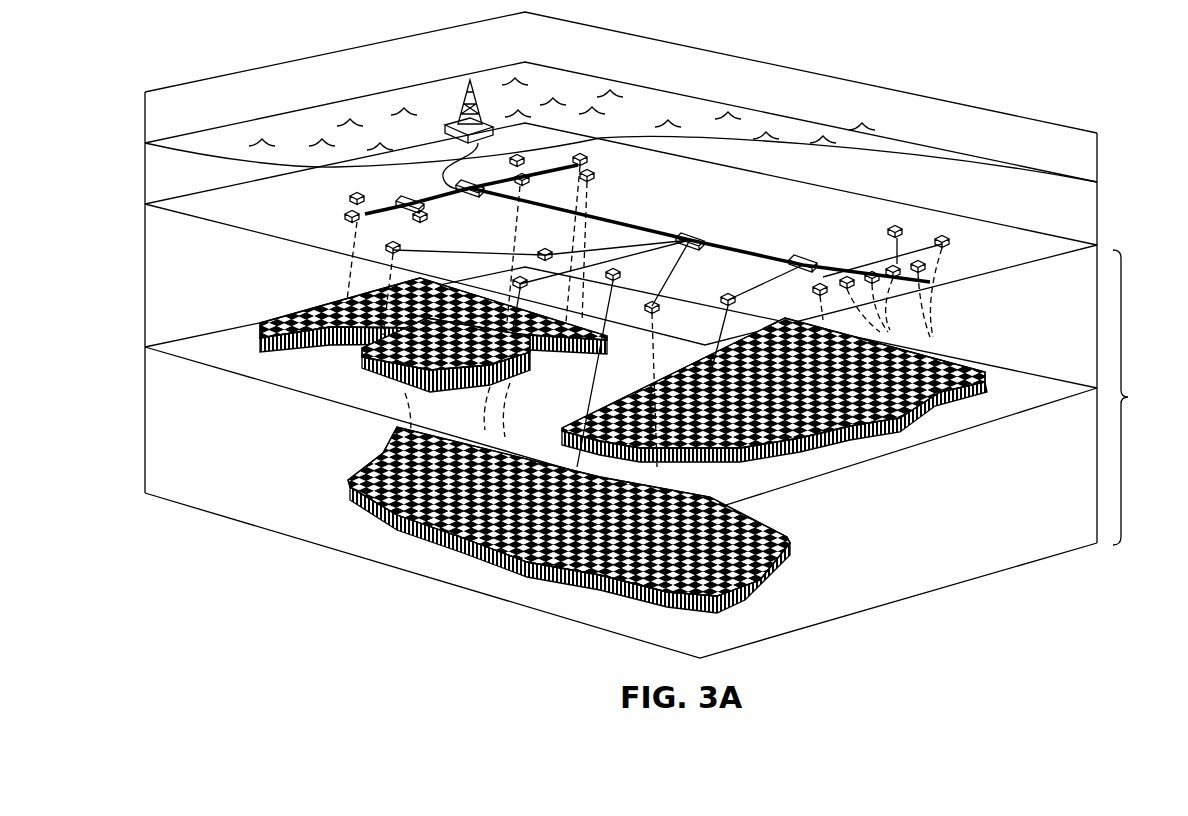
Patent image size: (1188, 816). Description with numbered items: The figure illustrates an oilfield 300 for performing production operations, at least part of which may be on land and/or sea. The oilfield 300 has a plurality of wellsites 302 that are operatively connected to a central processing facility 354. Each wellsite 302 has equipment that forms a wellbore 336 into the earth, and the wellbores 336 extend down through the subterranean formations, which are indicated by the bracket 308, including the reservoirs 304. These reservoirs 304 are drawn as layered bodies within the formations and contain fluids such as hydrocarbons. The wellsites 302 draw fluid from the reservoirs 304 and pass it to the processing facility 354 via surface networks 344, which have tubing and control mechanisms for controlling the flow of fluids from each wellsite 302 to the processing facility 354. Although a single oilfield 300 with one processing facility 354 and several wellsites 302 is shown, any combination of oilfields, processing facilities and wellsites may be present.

The oilfield 300 is at (206, 61).
The wellsite 302 is at (742, 277).
The reservoir 304 is at (888, 456).
The subsurface region 308 is at (1137, 397).
The wellbore 336 is at (952, 301).
The surface network 344 is at (384, 216).
The central processing facility 354 is at (456, 94).